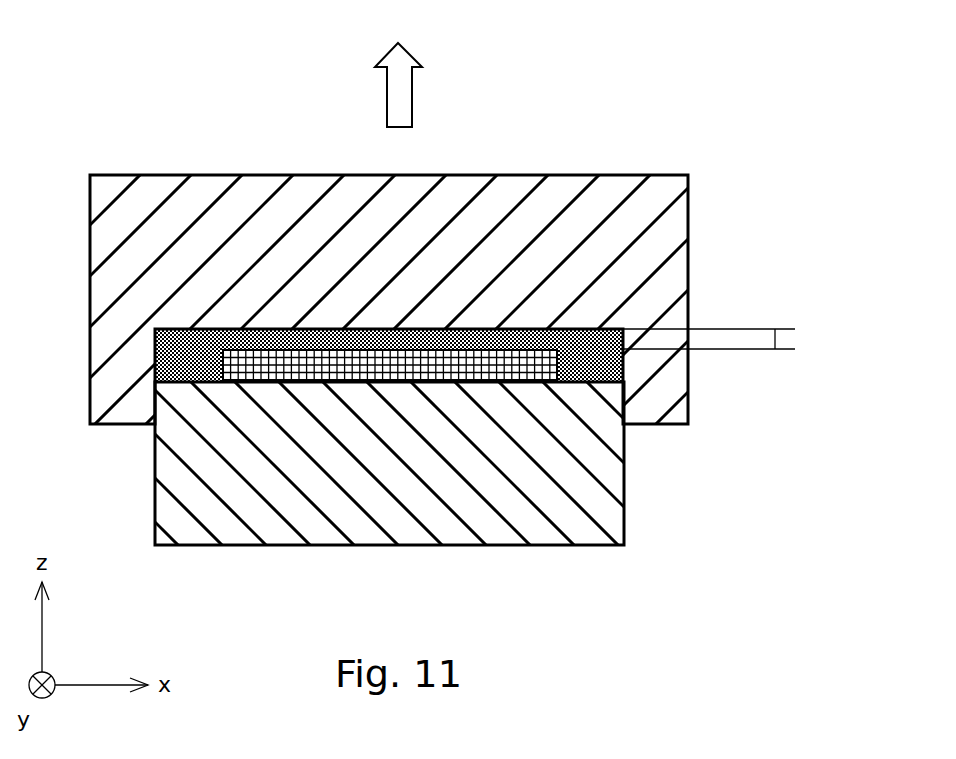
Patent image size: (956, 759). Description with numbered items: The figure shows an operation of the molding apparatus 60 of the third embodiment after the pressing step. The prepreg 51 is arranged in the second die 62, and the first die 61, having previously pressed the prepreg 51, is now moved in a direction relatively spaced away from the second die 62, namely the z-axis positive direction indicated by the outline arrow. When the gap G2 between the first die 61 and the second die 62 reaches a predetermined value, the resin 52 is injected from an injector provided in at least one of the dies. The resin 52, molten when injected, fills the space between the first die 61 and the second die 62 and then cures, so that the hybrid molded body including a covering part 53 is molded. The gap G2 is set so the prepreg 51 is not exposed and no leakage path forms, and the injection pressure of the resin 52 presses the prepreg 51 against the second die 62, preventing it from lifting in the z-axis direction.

The molding apparatus 60 is at (478, 306).
The first die 61 is at (172, 195).
The second die 62 is at (590, 485).
The resin 52 is at (597, 368).
The covering part 53 is at (297, 345).
The prepreg 51 is at (390, 365).
The gap G2 is at (777, 340).